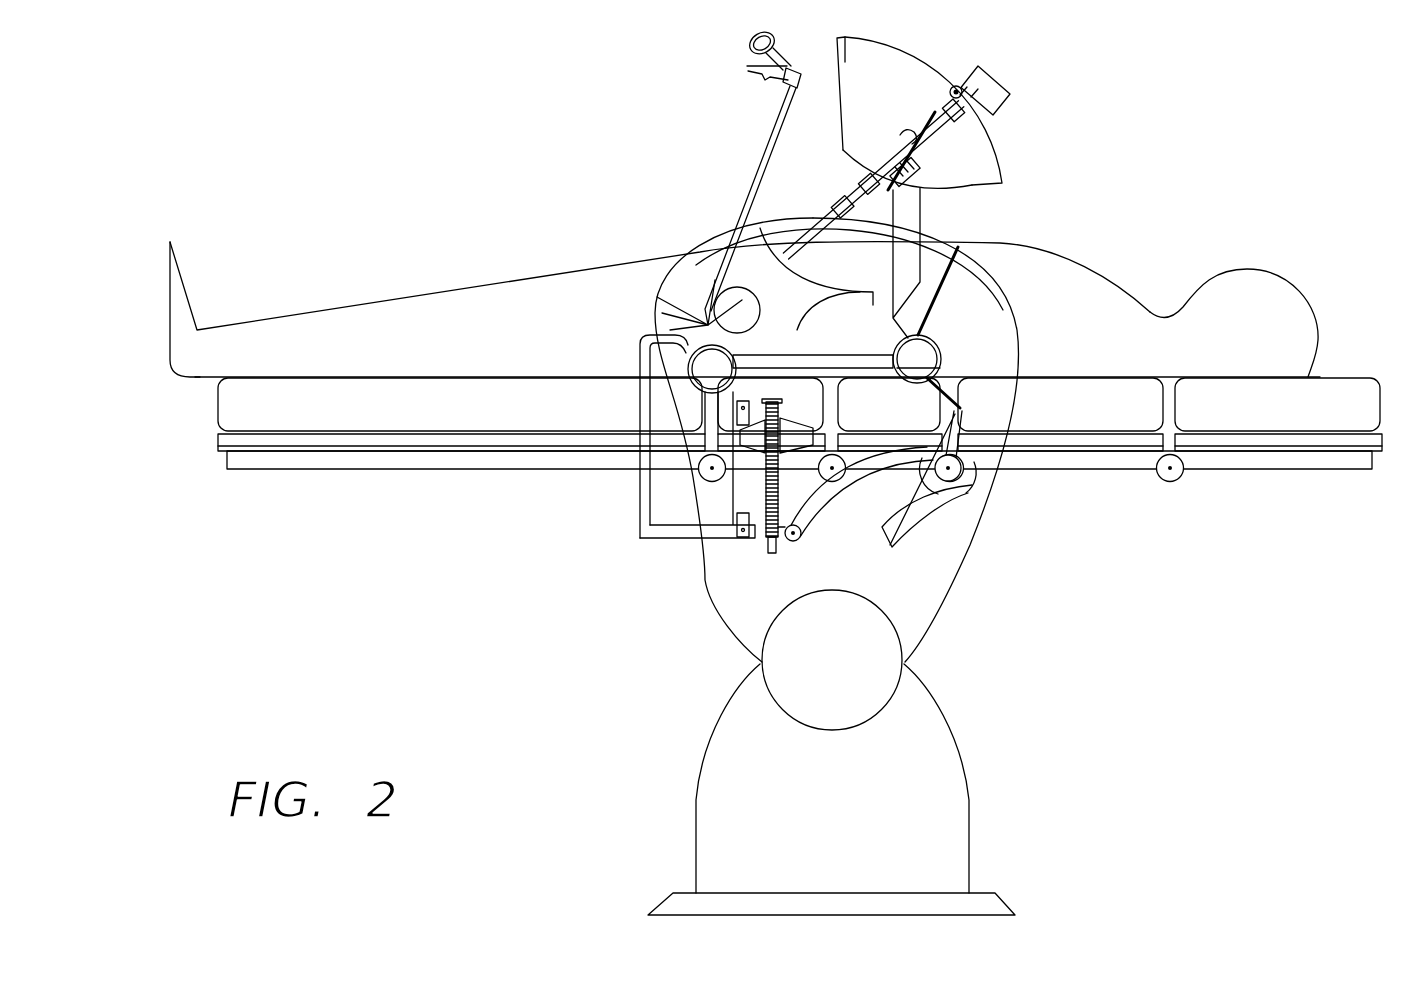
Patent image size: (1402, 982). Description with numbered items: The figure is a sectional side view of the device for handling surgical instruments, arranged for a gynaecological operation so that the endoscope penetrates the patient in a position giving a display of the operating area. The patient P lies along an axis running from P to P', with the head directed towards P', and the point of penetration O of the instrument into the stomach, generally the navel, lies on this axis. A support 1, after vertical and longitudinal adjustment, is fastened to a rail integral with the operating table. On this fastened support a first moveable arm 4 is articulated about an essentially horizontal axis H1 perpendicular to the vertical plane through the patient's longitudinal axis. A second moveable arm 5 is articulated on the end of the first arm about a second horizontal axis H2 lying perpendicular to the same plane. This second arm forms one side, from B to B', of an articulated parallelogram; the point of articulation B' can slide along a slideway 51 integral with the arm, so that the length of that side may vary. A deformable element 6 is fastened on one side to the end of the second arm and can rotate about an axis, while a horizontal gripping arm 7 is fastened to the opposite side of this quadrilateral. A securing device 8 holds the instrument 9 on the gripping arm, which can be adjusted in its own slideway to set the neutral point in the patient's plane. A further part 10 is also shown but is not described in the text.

The support 1 is at (670, 405).
The first moveable arm 4 is at (816, 343).
The second moveable arm 5 is at (993, 420).
The deformable element 6 is at (930, 250).
The horizontal gripping arm 7 is at (933, 120).
The device for securing an instrument 8 is at (953, 88).
The instrument 9 is at (913, 156).
The curved arm 10 is at (787, 490).
The slideway 51 is at (974, 462).
The point B is at (930, 353).
The point of articulation B' is at (948, 487).
The first horizontal axis H1 is at (648, 336).
The second horizontal axis H2 is at (928, 367).
The end of the patient's body axis P is at (660, 302).
The head end of the patient's body axis P' is at (1256, 323).
The point of penetration O is at (831, 200).